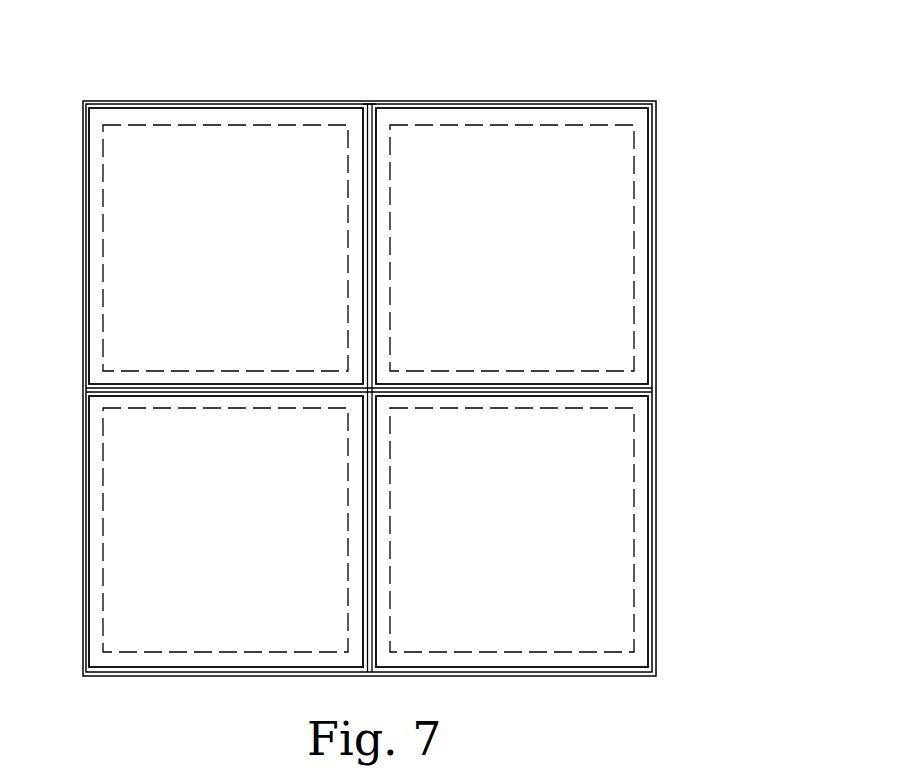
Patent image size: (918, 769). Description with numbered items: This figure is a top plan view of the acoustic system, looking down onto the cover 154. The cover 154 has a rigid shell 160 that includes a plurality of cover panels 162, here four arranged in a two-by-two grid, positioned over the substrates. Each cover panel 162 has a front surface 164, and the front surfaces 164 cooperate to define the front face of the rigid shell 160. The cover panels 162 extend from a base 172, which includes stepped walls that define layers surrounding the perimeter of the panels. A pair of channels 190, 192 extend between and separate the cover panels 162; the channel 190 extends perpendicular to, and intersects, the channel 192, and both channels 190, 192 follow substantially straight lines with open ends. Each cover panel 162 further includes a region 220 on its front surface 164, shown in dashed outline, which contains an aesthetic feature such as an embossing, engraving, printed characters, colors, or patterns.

The cover 154 is at (419, 383).
The rigid shell 160 is at (376, 433).
The cover panel 162 is at (370, 365).
The front surface 164 is at (370, 365).
The base 172 is at (369, 365).
The channel 190 is at (427, 388).
The channel 192 is at (402, 68).
The region 220 is at (405, 385).